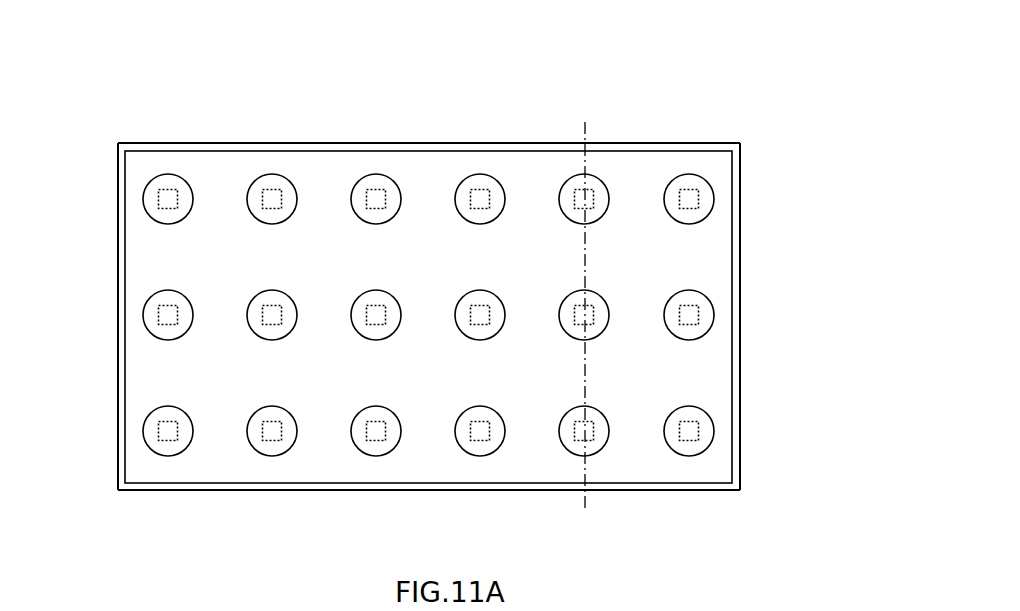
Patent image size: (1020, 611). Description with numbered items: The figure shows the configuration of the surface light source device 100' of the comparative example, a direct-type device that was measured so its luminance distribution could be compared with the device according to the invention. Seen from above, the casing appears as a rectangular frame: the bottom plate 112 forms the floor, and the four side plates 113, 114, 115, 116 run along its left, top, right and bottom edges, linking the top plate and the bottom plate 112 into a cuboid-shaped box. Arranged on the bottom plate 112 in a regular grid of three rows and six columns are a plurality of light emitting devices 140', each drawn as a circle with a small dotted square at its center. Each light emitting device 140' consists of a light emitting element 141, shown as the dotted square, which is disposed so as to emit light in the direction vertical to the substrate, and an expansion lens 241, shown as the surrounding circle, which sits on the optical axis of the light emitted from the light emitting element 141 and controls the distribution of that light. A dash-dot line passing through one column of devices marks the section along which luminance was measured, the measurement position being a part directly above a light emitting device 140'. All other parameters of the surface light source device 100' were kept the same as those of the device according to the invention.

The surface light source device 100' is at (432, 301).
The bottom plate 112 is at (330, 180).
The side plate 113 is at (119, 324).
The side plate 114 is at (463, 150).
The side plate 115 is at (741, 337).
The side plate 116 is at (528, 490).
The light emitting device 140' is at (199, 494).
The light emitting element 141 is at (263, 438).
The expansion lens 241 is at (280, 456).